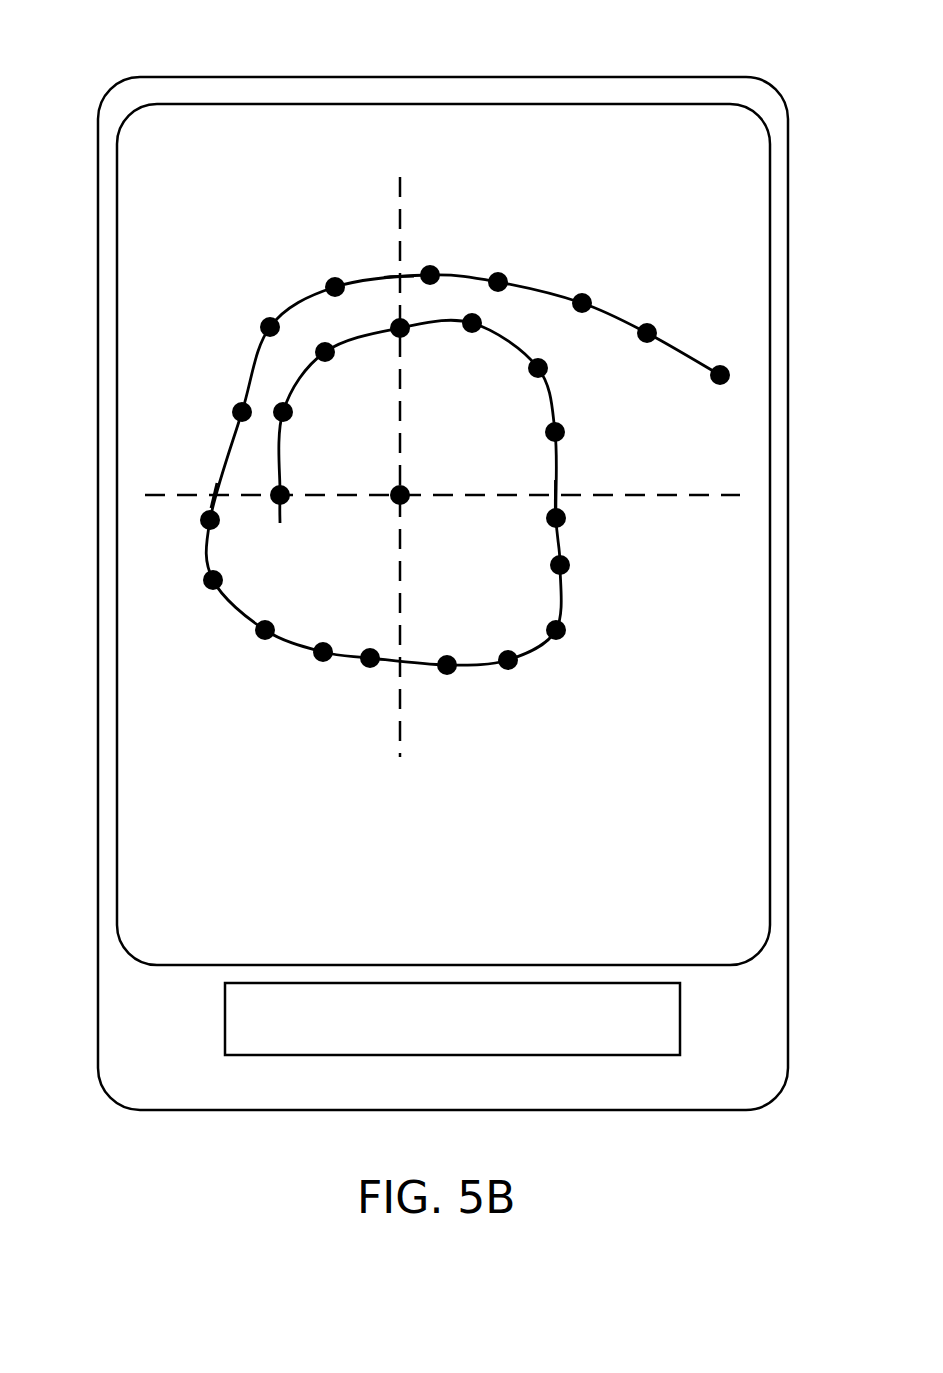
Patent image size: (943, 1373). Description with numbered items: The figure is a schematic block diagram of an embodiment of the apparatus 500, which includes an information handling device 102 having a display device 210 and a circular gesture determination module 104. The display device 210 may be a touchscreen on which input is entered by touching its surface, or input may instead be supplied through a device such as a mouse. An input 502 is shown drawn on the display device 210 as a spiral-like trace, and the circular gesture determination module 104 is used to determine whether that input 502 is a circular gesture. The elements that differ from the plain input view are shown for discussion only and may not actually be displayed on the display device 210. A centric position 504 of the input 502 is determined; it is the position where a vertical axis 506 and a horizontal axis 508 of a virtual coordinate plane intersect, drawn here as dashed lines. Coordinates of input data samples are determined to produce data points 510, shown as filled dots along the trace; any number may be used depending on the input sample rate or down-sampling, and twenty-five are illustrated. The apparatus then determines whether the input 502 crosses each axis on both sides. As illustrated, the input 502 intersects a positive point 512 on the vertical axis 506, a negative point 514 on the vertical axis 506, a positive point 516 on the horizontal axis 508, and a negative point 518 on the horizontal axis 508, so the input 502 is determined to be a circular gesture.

The apparatus 500 is at (88, 59).
The information handling device 102 is at (98, 273).
The display device 210 is at (117, 422).
The circular gesture determination module 104 is at (225, 1016).
The input 502 is at (303, 297).
The centric position 504 is at (398, 503).
The vertical axis 506 is at (398, 415).
The horizontal axis 508 is at (516, 495).
The data points 510 is at (718, 384).
The positive point on the vertical axis 512 is at (384, 281).
The negative point on the vertical axis 514 is at (370, 668).
The positive point on the horizontal axis 516 is at (555, 497).
The negative point on the horizontal axis 518 is at (213, 495).